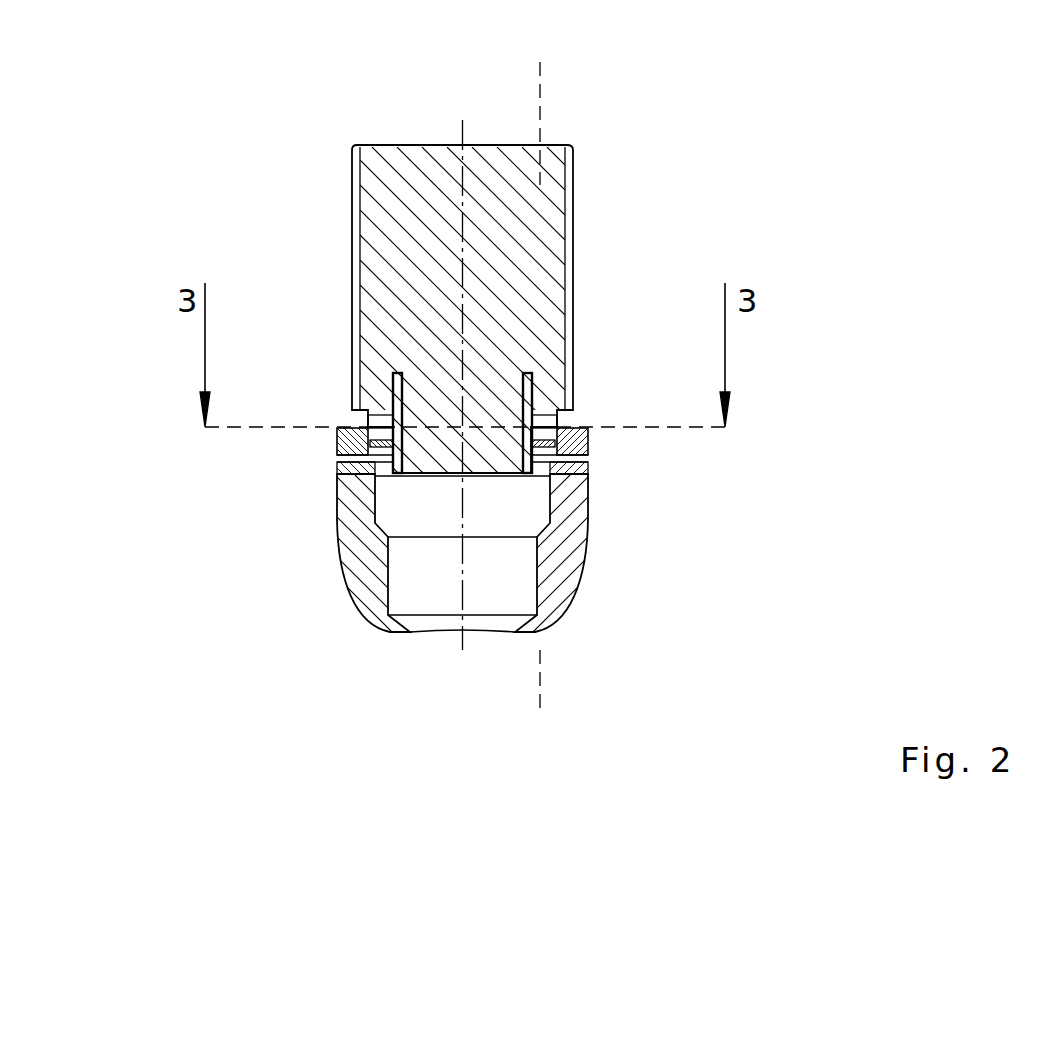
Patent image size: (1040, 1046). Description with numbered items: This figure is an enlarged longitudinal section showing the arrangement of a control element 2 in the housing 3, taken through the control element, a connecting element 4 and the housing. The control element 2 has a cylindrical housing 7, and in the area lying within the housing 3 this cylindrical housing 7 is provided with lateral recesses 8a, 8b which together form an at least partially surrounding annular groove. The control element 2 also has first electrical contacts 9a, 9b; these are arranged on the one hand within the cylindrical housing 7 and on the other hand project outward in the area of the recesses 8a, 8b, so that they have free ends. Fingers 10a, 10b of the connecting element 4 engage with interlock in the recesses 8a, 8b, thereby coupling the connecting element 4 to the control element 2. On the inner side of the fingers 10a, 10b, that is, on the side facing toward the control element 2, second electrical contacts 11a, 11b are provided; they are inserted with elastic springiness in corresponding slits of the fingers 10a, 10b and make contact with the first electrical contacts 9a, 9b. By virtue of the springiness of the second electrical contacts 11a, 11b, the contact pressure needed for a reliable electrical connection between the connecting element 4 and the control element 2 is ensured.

The control element 2 is at (552, 296).
The housing 3 is at (370, 573).
The connecting element 4 is at (700, 717).
The cylindrical housing 7 is at (570, 235).
The lateral recess 8a is at (372, 408).
The lateral recess 8b is at (562, 408).
The first electrical contact 9a is at (392, 375).
The first electrical contact 9b is at (540, 393).
The finger 10a is at (337, 455).
The finger 10b is at (587, 457).
The second electrical contact 11a is at (337, 540).
The second electrical contact 11b is at (581, 510).